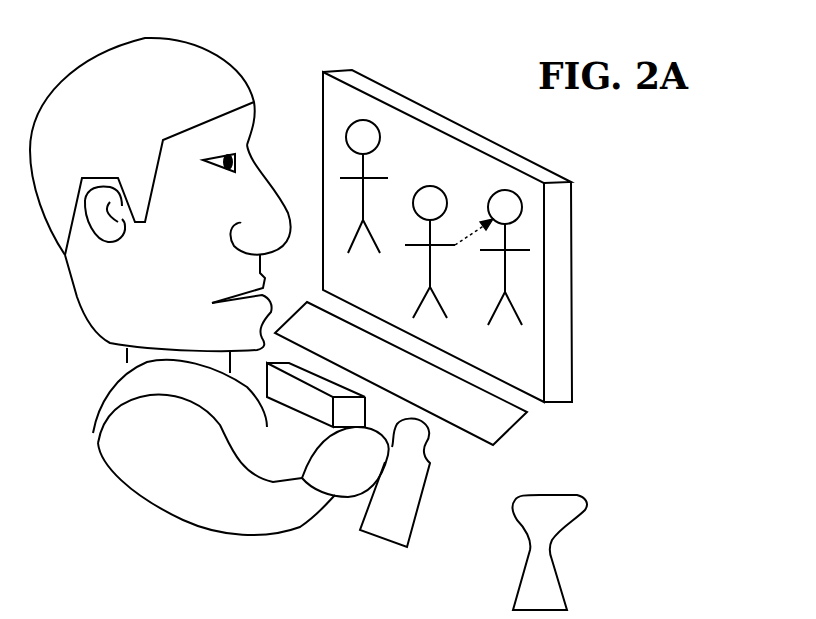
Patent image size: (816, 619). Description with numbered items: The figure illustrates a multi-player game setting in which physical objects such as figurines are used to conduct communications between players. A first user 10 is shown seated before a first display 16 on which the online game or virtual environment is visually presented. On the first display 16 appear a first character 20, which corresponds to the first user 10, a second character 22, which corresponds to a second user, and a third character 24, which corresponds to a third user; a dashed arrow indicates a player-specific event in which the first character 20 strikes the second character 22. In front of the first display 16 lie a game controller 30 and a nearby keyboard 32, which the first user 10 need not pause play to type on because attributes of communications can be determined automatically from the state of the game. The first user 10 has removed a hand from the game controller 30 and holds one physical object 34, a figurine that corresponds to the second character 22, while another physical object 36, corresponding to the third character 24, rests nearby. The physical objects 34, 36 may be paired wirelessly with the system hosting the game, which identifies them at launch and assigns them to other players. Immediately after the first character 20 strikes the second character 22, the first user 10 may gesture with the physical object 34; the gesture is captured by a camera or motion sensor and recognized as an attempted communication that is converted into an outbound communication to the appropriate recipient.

The first user 10 is at (220, 53).
The first display 16 is at (519, 153).
The first character 20 is at (433, 187).
The second character 22 is at (522, 207).
The third character 24 is at (371, 122).
The game controller 30 is at (312, 407).
The keyboard 32 is at (517, 425).
The physical object 34 is at (420, 513).
The physical object 36 is at (550, 493).